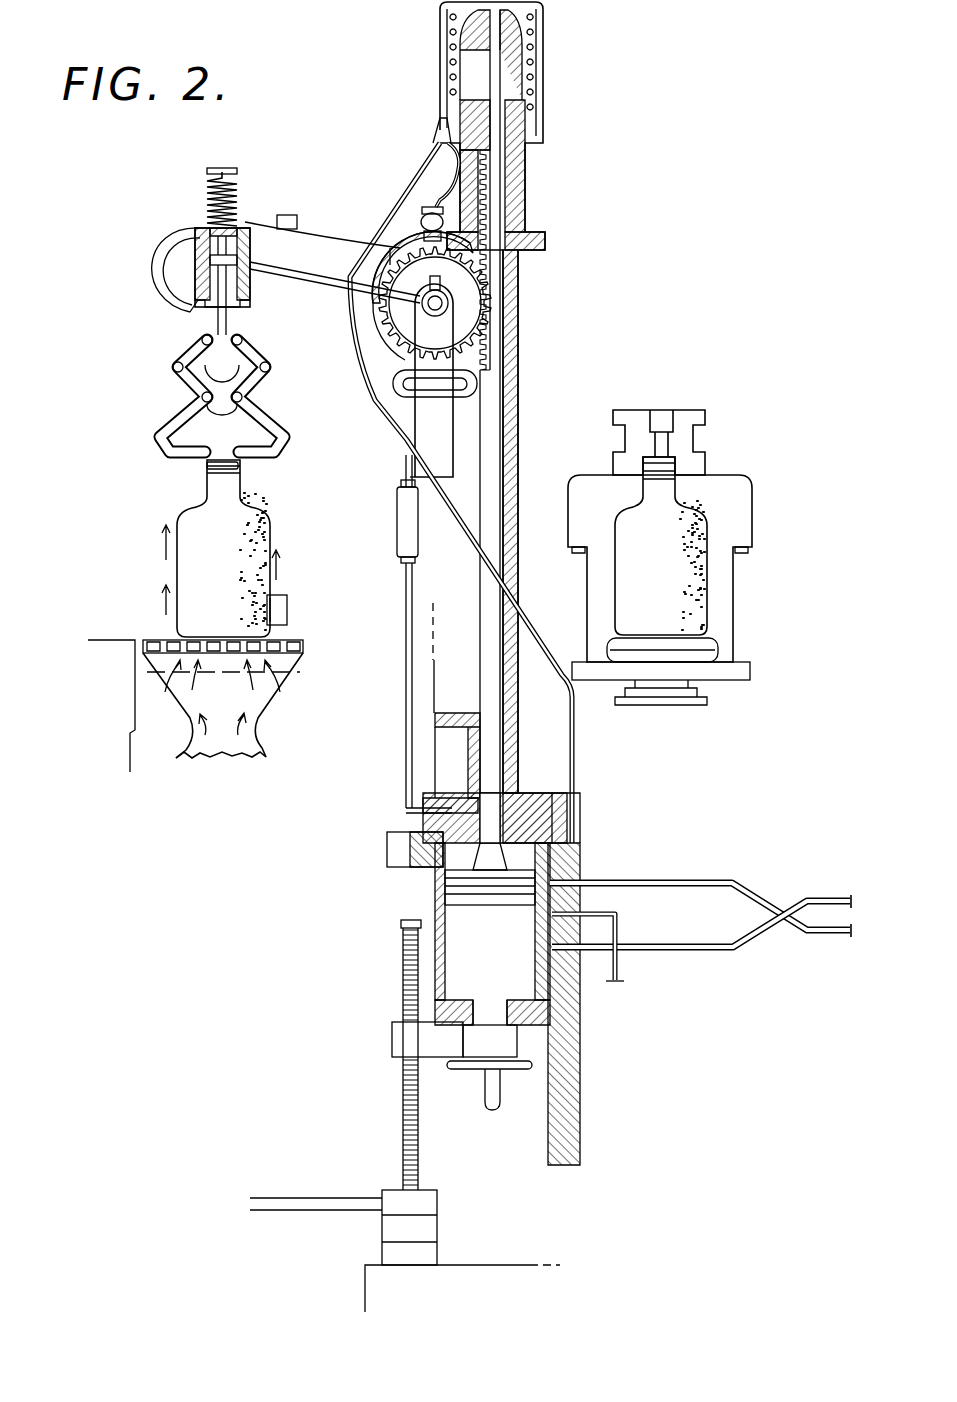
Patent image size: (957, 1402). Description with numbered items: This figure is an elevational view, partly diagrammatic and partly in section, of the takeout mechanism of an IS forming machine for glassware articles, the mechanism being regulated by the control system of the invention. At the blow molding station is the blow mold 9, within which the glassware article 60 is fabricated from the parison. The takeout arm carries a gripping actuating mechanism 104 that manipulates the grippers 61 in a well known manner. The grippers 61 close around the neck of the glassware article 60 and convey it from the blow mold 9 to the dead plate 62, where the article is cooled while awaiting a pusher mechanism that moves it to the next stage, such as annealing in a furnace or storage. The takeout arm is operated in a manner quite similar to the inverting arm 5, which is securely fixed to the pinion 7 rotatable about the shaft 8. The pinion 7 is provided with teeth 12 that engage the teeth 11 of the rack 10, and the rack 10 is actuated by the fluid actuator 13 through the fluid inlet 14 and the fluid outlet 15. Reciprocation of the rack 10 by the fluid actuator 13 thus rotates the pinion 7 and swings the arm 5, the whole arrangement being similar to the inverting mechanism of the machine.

The inverting arm 5 is at (327, 243).
The pinion 7 is at (465, 300).
The shaft 8 is at (440, 305).
The blow mold 9 is at (730, 508).
The rack 10 is at (490, 407).
The teeth of rack 11 is at (478, 178).
The teeth of pinion 12 is at (473, 265).
The fluid actuator 13 is at (460, 960).
The fluid inlet 14 is at (622, 972).
The fluid outlet 15 is at (713, 953).
The glassware article 60 is at (190, 548).
The grippers 61 is at (170, 432).
The dead plate 62 is at (258, 708).
The gripping actuating mechanism 104 is at (190, 308).